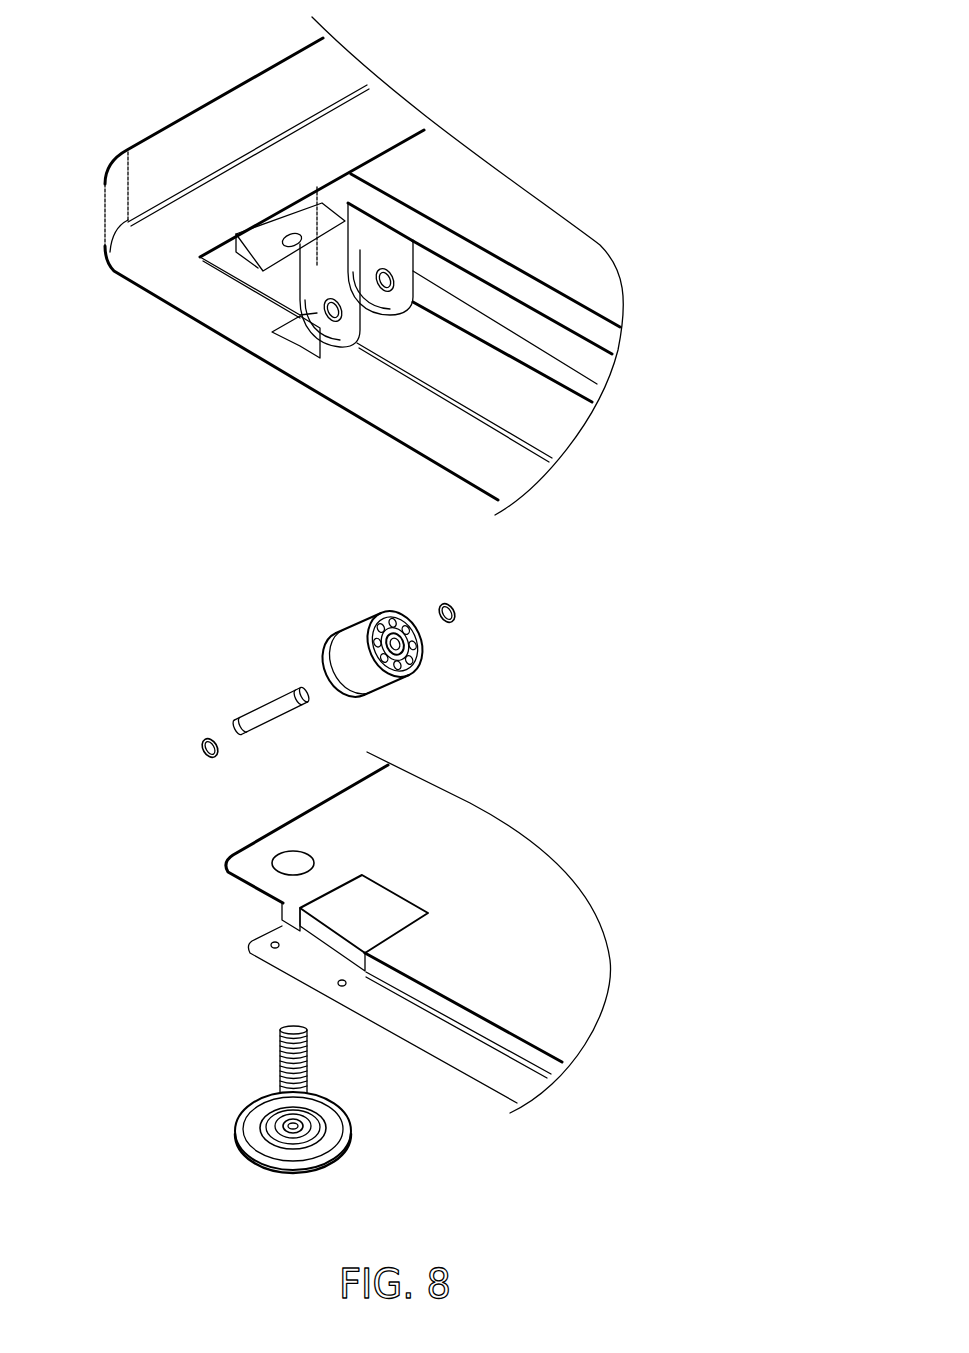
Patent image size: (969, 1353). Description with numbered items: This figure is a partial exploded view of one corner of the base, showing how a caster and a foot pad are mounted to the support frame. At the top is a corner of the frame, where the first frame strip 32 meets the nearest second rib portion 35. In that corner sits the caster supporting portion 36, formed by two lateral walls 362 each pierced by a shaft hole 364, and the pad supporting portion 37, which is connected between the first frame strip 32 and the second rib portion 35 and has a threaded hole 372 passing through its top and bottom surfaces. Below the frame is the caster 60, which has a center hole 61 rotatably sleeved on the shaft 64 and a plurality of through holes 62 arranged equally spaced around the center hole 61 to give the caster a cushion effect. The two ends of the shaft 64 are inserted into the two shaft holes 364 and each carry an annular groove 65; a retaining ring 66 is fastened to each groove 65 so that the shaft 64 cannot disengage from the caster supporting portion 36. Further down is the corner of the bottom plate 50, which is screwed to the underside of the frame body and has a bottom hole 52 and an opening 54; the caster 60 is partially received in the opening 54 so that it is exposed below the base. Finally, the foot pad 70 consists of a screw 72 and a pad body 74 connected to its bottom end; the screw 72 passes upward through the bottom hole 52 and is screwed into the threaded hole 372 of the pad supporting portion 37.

The first frame strip 32 is at (410, 413).
The second rib portion 35 is at (503, 272).
The caster supporting portion 36 is at (386, 6).
The lateral wall 362 is at (337, 245).
The shaft hole 364 is at (385, 292).
The pad supporting portion 37 is at (277, 202).
The threaded hole 372 is at (282, 233).
The bottom plate 50 is at (423, 932).
The bottom hole 52 is at (283, 853).
The opening 54 is at (335, 940).
The caster 60 is at (328, 612).
The center hole 61 is at (418, 643).
The through hole 62 is at (417, 670).
The shaft 64 is at (263, 714).
The annular groove 65 is at (298, 694).
The retaining ring 66 is at (453, 616).
The foot pad 70 is at (122, 1053).
The screw 72 is at (280, 1055).
The pad body 74 is at (237, 1143).